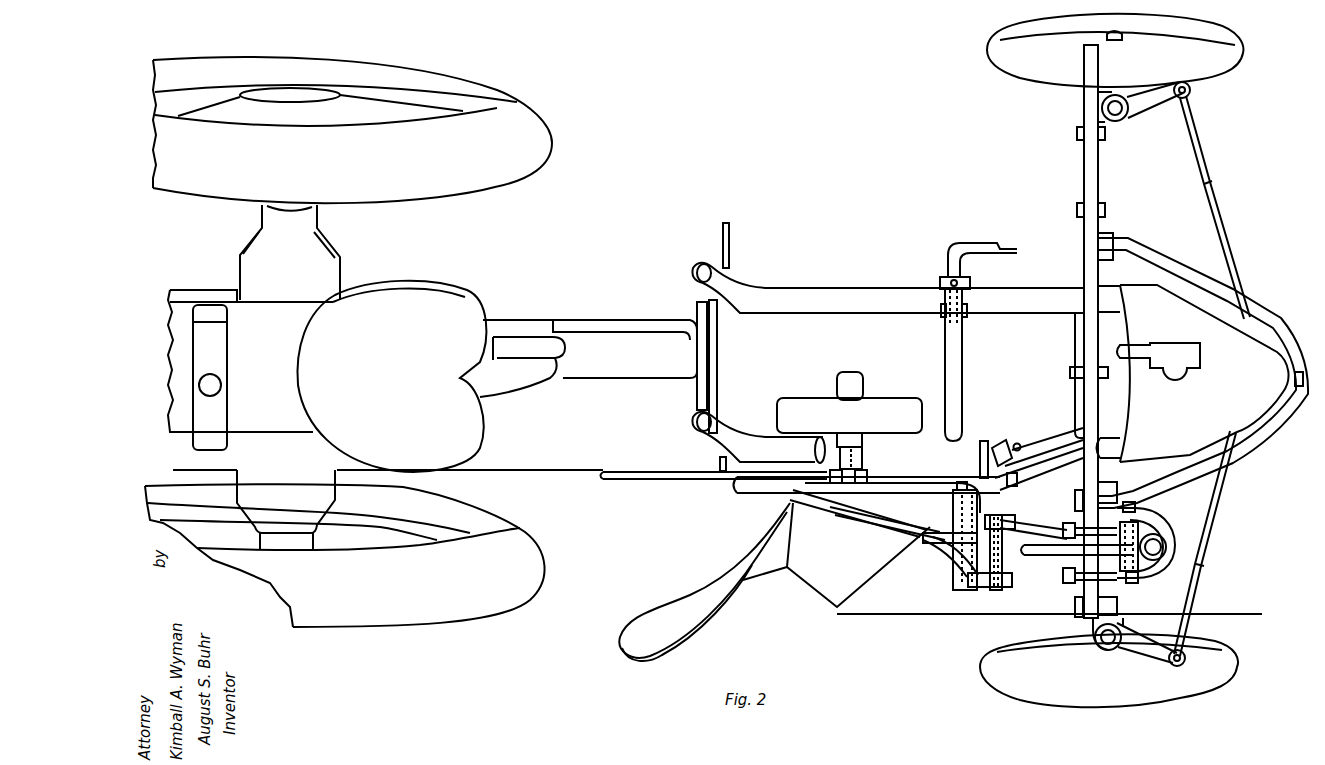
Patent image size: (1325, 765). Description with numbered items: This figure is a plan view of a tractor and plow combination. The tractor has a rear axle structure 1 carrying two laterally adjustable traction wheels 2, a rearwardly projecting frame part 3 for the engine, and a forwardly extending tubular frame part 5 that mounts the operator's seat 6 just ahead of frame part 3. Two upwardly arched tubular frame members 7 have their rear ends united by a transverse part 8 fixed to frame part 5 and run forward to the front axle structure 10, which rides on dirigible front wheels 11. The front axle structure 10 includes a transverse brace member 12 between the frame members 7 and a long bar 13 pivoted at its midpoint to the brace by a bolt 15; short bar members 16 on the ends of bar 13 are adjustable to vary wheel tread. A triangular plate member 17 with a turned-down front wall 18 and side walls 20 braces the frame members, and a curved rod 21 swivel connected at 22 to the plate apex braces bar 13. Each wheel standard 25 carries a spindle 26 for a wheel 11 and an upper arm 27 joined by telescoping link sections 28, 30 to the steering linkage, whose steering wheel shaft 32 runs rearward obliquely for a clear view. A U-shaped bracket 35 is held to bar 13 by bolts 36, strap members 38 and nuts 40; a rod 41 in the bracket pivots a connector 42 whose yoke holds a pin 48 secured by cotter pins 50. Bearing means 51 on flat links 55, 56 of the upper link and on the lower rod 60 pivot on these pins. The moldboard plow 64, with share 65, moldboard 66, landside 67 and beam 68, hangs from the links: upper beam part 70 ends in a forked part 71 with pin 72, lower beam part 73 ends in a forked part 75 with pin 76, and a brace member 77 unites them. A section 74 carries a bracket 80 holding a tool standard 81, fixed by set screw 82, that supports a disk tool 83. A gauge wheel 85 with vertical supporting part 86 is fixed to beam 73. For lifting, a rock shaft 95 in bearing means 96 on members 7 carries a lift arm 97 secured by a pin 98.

The rear axle structure 1 is at (338, 270).
The traction wheels 2 is at (500, 190).
The rearwardly projecting frame part 3 is at (190, 292).
The forwardly extending tubular frame part 5 is at (606, 378).
The operator's seat or station 6 is at (472, 300).
The tubular frame members 7 is at (700, 282).
The transverse part 8 is at (716, 366).
The front axle structure 10 is at (1162, 205).
The dirigible front wheels 11 is at (1017, 78).
The transverse brace member 12 is at (1075, 333).
The bar 13 is at (1083, 267).
The bolt 15 is at (1068, 376).
The bar members 16 is at (1100, 167).
The plate member 17 is at (1130, 398).
The front wall 18 is at (1305, 412).
The side walls 20 is at (1178, 462).
The curved rod 21 is at (1185, 268).
The swivel connection 22 is at (1294, 378).
The wheel standard 25 is at (1120, 112).
The spindle 26 is at (1093, 650).
The arm 27 is at (1175, 82).
The telescoping section 28 is at (1206, 145).
The telescoping section 30 is at (1224, 215).
The steering wheel shaft or tube 32 is at (1140, 345).
The U-shaped bracket 35 is at (1156, 543).
The bolts 36 is at (1063, 578).
The vertical strap members 38 is at (1075, 520).
The nuts 40 is at (1063, 573).
The rod 41 is at (1162, 547).
The connector 42 is at (1177, 562).
The pin 48 is at (1113, 500).
The cotter pins 50 is at (1138, 578).
The bearing means 51 is at (1152, 514).
The flat link 55 is at (1075, 566).
The flat link 56 is at (1037, 548).
The rod 60 is at (1030, 520).
The moldboard plow 64 is at (858, 555).
The share 65 is at (822, 606).
The moldboard 66 is at (668, 600).
The landside 67 is at (639, 473).
The beam 68 is at (730, 493).
The upper beam part 70 is at (828, 510).
The forked end part 71 is at (958, 568).
The transverse pin 72 is at (992, 592).
The lower beam part 73 is at (893, 484).
The section 74 is at (984, 444).
The forked end part 75 is at (933, 543).
The pin 76 is at (966, 478).
The brace member 77 is at (880, 518).
The bracket 80 is at (1005, 440).
The tool standard 81 is at (1044, 447).
The set screw 82 is at (1029, 437).
The disk shaped tool 83 is at (1043, 477).
The gauge wheel 85 is at (849, 409).
The vertical wheel supporting part 86 is at (858, 478).
The rock shaft 95 is at (945, 352).
The bearing means 96 is at (940, 283).
The lift arm 97 is at (975, 240).
The pin 98 is at (968, 283).